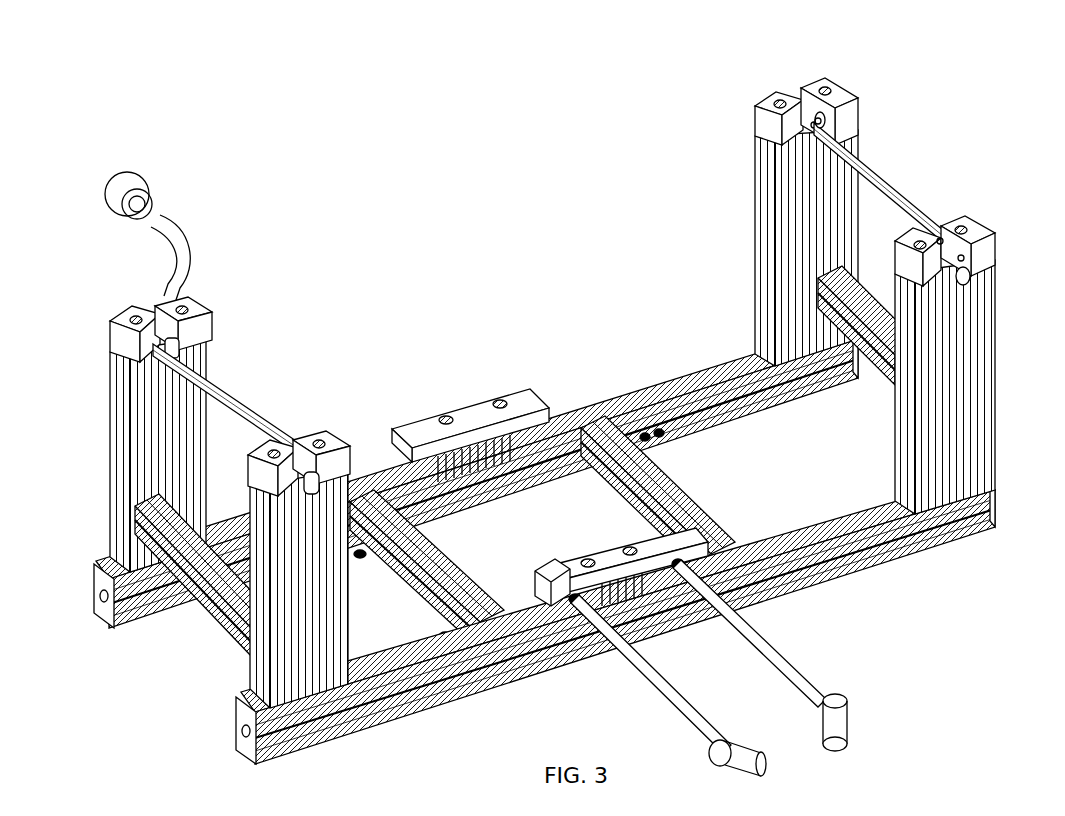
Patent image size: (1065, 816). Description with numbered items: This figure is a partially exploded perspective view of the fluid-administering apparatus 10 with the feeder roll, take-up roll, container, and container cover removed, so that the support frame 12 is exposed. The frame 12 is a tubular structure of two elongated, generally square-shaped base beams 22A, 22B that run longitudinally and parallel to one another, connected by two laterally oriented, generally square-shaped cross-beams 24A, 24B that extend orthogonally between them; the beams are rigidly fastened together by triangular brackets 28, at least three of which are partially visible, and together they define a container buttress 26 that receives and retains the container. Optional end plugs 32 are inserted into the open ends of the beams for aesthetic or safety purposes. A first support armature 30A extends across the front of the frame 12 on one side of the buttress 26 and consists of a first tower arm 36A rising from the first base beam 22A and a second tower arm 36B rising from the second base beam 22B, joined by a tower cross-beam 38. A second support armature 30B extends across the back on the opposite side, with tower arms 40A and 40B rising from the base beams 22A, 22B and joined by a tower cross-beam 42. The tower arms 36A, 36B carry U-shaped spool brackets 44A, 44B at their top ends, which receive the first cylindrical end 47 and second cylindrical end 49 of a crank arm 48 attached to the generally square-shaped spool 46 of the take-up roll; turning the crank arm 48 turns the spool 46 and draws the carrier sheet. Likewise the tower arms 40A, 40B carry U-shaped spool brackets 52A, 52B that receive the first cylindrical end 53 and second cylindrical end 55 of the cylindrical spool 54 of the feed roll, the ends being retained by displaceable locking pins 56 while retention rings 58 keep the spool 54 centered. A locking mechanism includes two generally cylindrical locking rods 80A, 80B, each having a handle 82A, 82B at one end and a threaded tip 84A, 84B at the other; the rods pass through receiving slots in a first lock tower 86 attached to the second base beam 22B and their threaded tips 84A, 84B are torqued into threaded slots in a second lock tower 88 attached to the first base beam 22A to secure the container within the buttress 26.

The fluid-administering apparatus 10 is at (552, 398).
The support frame 12 is at (559, 517).
The first base beam 22A is at (677, 385).
The second base beam 22B is at (777, 540).
The cross-beam 24A is at (380, 495).
The cross-beam 24B is at (612, 425).
The container buttress 26 is at (588, 494).
The triangular brackets 28 is at (437, 628).
The first support armature 30A is at (199, 424).
The second support armature 30B is at (882, 267).
The end plugs 32 is at (226, 733).
The first tower arm 36A is at (103, 517).
The second tower arm 36B is at (243, 543).
The tower cross-beam 38 is at (187, 583).
The first tower arm 40A is at (846, 137).
The second tower arm 40B is at (988, 286).
The tower cross-beam 42 is at (860, 290).
The first spool bracket 44A is at (178, 290).
The second spool bracket 44B is at (323, 438).
The spool 46 is at (231, 385).
The first cylindrical end 47 is at (158, 330).
The crank arm 48 is at (154, 220).
The second cylindrical end 49 is at (296, 464).
The first spool bracket 52A is at (829, 80).
The second spool bracket 52B is at (970, 226).
The first cylindrical end 53 is at (805, 114).
The cylindrical spool 54 is at (862, 173).
The second cylindrical end 55 is at (953, 247).
The locking pins 56 is at (816, 108).
The retention rings 58 is at (807, 114).
The first locking rod 80A is at (667, 691).
The second locking rod 80B is at (770, 650).
The handle 82A is at (742, 752).
The handle 82B is at (840, 726).
The threaded tip 84A is at (568, 586).
The threaded tip 84B is at (666, 557).
The first lock tower 86 is at (530, 586).
The second lock tower 88 is at (530, 403).